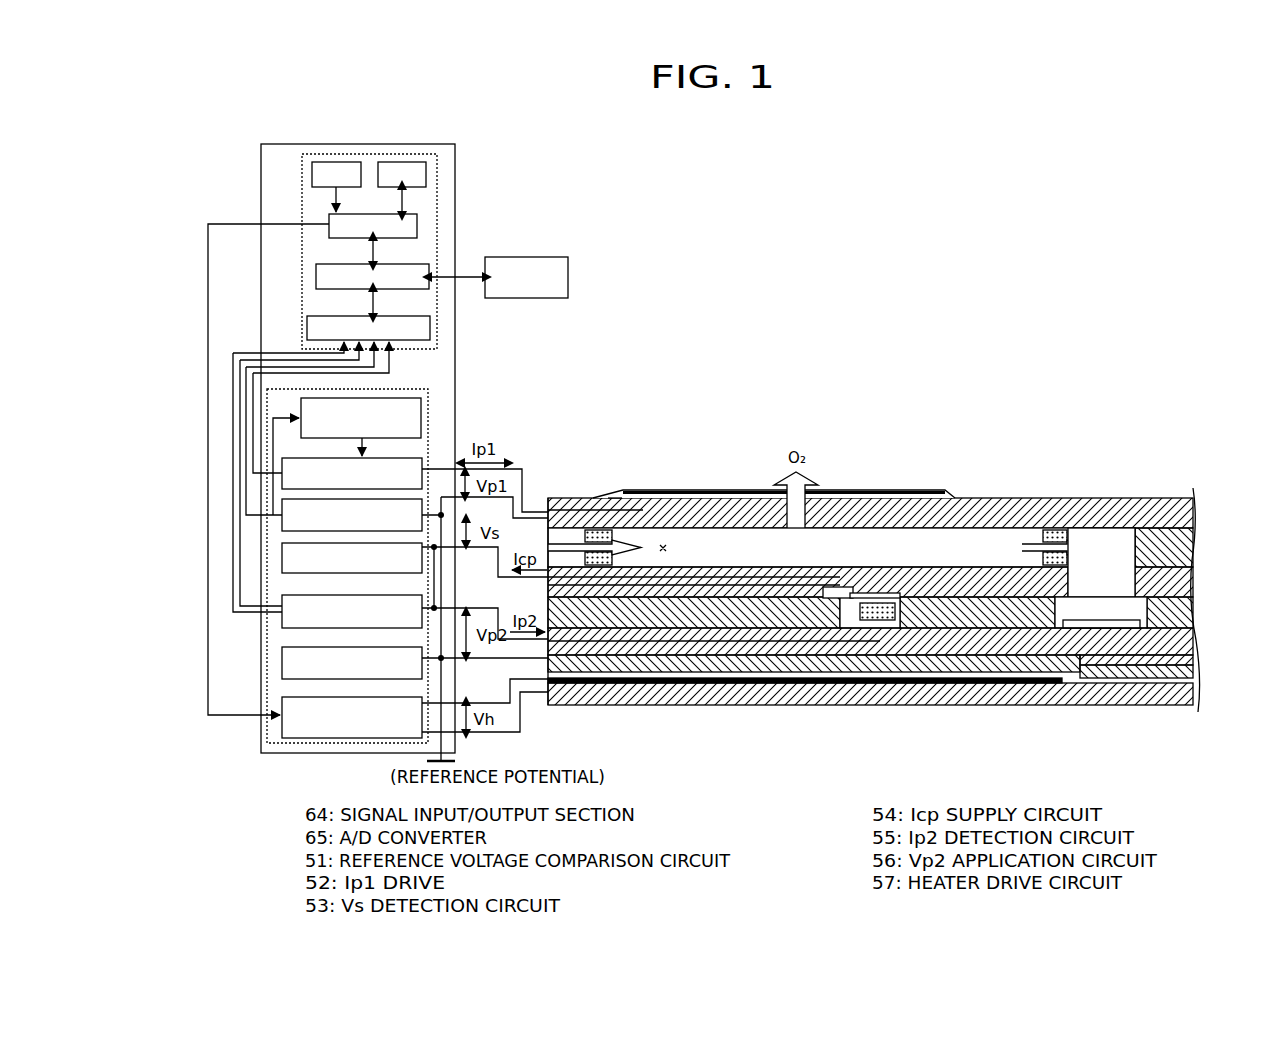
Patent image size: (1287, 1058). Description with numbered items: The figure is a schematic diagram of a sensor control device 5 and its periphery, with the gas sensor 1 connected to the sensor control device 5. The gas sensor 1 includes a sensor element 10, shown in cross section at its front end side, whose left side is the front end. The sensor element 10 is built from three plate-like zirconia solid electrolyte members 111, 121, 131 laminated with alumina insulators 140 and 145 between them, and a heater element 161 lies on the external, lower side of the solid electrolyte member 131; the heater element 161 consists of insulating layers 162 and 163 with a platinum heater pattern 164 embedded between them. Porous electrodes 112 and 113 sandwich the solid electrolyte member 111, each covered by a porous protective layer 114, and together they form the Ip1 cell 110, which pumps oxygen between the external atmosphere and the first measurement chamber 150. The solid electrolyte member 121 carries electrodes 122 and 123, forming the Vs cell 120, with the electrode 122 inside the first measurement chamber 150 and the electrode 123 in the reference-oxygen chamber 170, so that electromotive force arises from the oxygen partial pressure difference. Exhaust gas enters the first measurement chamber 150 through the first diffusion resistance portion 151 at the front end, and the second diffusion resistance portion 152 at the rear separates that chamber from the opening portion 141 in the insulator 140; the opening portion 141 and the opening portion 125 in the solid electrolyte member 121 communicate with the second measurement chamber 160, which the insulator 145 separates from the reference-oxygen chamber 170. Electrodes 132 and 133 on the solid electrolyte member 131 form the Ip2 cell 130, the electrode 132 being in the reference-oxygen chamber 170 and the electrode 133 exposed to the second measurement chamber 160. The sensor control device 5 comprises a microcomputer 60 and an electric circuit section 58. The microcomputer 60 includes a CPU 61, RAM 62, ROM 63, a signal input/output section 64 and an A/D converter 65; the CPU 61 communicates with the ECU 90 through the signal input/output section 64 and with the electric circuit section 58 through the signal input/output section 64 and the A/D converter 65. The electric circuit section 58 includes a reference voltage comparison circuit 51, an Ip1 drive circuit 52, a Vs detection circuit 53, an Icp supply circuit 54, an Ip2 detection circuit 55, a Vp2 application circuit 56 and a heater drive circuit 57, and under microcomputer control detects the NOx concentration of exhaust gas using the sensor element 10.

The gas sensor 1 is at (866, 306).
The sensor control device 5 is at (372, 144).
The sensor element 10 is at (1087, 386).
The reference voltage comparison circuit 51 is at (421, 413).
The Ip1 drive circuit 52 is at (422, 462).
The Vs detection circuit 53 is at (422, 507).
The Icp supply circuit 54 is at (422, 559).
The Ip2 detection circuit 55 is at (422, 600).
The Vp2 application circuit 56 is at (422, 672).
The heater drive circuit 57 is at (360, 740).
The electric circuit section 58 is at (428, 390).
The microcomputer 60 is at (437, 193).
The CPU 61 is at (417, 224).
The RAM 62 is at (402, 162).
The ROM 63 is at (340, 162).
The signal input/output section 64 is at (429, 266).
The A/D converter 65 is at (430, 329).
The ECU 90 is at (527, 257).
The Ip1 cell 110 is at (668, 420).
The solid electrolyte member 111 is at (757, 522).
The porous electrode 112 is at (727, 534).
The porous electrode 113 is at (698, 500).
The porous protective layer 114 is at (615, 520).
The oxygen concentration detection cell (Vs cell) 120 is at (992, 422).
The solid electrolyte member 121 is at (978, 588).
The porous electrode 122 is at (926, 596).
The porous electrode 123 is at (882, 590).
The opening portion 125 is at (1100, 620).
The Ip2 cell 130 is at (957, 747).
The solid electrolyte member 131 is at (1180, 648).
The porous electrode 132 is at (962, 662).
The porous electrode 133 is at (1040, 692).
The insulator 140 is at (1180, 550).
The opening portion 141 is at (1160, 545).
The insulator 145 is at (1180, 616).
The first measurement chamber 150 is at (664, 555).
The first diffusion resistance portion 151 is at (598, 533).
The second diffusion resistance portion 152 is at (1055, 535).
The second measurement chamber 160 is at (1112, 580).
The heater element 161 is at (1234, 662).
The insulating layer 162 is at (1180, 672).
The insulating layer 163 is at (1180, 696).
The heater pattern 164 is at (880, 622).
The reference-oxygen chamber 170 is at (806, 684).